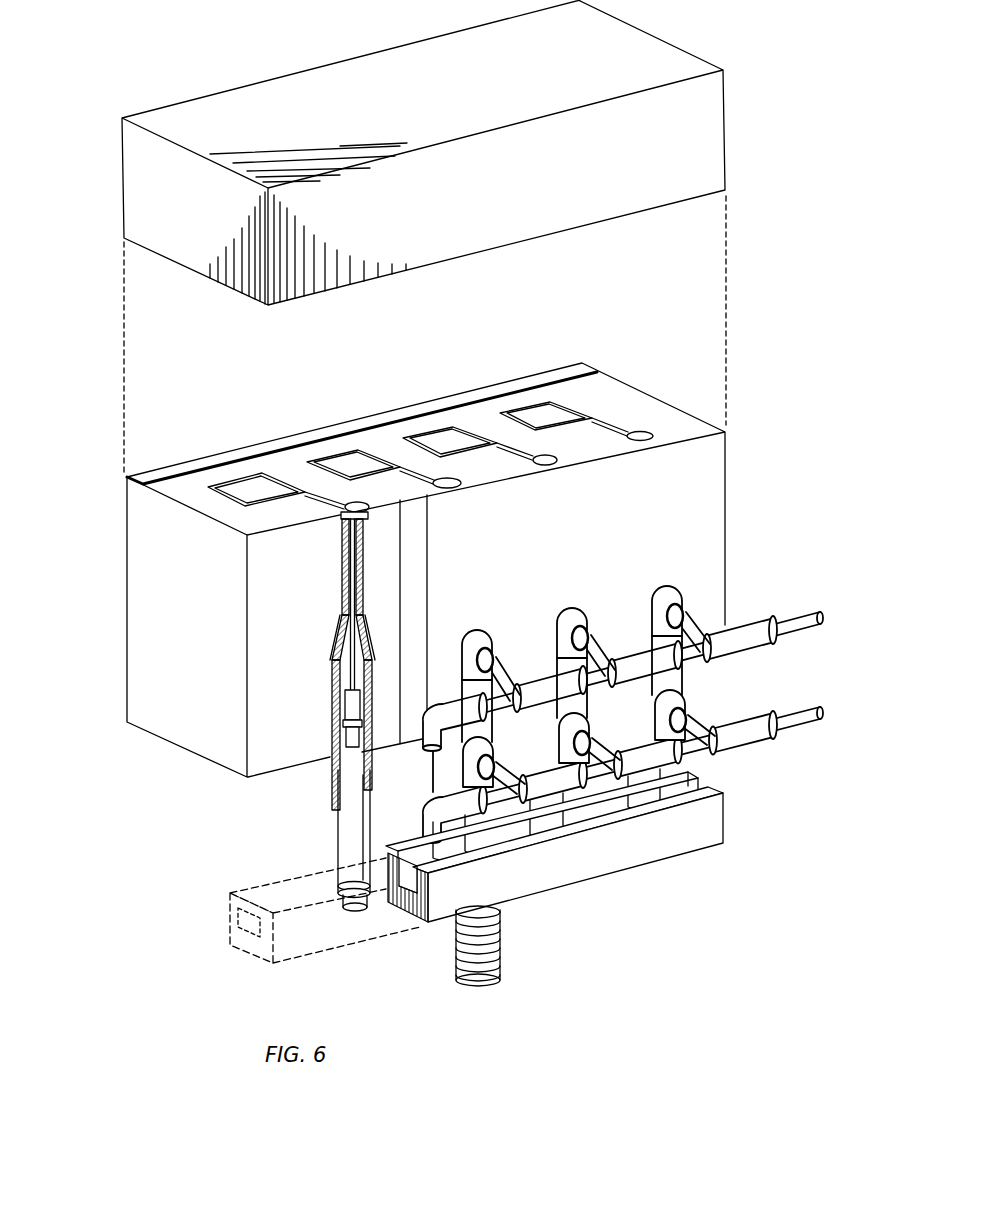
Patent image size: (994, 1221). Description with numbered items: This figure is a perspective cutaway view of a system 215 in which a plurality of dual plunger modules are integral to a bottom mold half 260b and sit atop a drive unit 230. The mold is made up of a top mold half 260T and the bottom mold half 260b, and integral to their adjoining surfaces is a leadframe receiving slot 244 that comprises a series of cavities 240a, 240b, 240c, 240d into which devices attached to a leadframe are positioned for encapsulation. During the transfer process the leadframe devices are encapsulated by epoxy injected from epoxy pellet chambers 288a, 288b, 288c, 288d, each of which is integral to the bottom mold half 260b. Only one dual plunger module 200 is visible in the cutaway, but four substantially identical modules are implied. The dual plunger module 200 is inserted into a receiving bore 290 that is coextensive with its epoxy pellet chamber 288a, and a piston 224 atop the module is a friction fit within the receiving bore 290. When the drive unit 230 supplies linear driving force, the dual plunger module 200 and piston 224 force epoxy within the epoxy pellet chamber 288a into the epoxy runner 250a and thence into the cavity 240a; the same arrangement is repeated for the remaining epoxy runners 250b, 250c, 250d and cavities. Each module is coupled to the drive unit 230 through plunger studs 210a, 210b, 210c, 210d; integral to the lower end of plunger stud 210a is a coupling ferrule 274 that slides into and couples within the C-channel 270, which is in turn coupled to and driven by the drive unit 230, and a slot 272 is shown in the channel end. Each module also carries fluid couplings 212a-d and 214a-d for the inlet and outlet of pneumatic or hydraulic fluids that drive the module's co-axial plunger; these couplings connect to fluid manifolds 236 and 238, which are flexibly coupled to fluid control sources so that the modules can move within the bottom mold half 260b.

The system 215 is at (136, 86).
The top mold half 260T is at (137, 218).
The bottom mold half 260b is at (147, 582).
The cavity 240a is at (238, 483).
The cavity 240b is at (325, 467).
The cavity 240c is at (420, 445).
The cavity 240d is at (525, 420).
The leadframe receiving slot 244 is at (590, 398).
The epoxy runner 250a is at (333, 510).
The epoxy runner 250b is at (440, 487).
The epoxy runner 250c is at (548, 449).
The epoxy runner 250d is at (615, 412).
The epoxy pellet chamber 288a is at (355, 508).
The epoxy pellet chamber 288b is at (455, 487).
The epoxy pellet chamber 288c is at (543, 462).
The epoxy pellet chamber 288d is at (648, 432).
The piston 224 is at (362, 545).
The receiving bore 290 is at (343, 590).
The dual plunger module 200 is at (312, 652).
The fluid couplings 212a-d is at (667, 586).
The fluid couplings 214a-d is at (670, 690).
The fluid manifold 236 is at (803, 612).
The fluid manifold 238 is at (812, 732).
The C-channel 270 is at (723, 822).
The slot 272 is at (408, 878).
The coupling ferrule 274 is at (330, 888).
The plunger stud 210a is at (350, 833).
The plunger stud 210b is at (467, 855).
The plunger stud 210c is at (563, 835).
The plunger stud 210d is at (657, 808).
The drive unit 230 is at (500, 962).